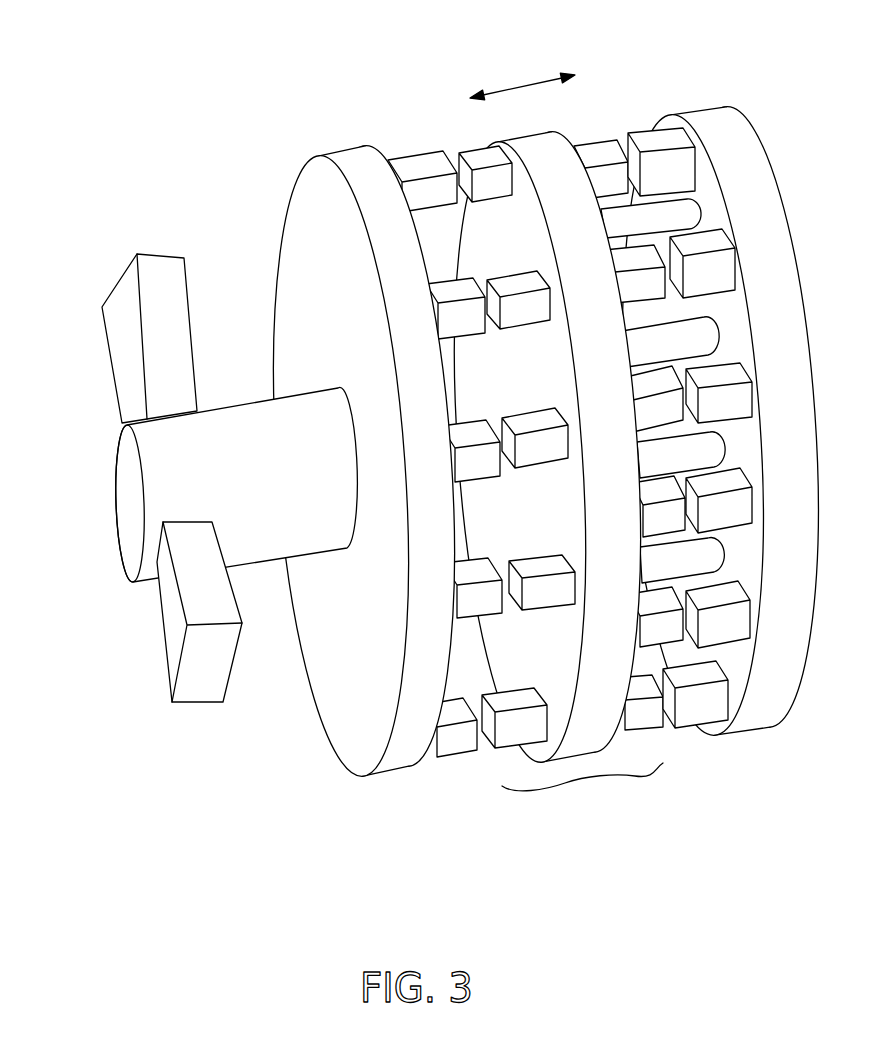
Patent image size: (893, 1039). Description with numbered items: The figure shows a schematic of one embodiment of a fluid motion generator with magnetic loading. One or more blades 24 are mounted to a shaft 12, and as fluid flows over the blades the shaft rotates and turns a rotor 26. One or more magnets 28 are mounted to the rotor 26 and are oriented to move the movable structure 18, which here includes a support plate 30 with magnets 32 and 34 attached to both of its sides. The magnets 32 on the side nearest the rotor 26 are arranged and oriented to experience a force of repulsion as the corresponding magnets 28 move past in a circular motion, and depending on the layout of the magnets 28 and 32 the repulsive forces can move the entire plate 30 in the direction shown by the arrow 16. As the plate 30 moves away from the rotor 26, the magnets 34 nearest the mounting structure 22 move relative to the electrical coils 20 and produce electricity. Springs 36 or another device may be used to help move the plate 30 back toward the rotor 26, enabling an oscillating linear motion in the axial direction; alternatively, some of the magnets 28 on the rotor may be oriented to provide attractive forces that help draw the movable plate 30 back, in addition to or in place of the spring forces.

The shaft 12 is at (132, 524).
The arrow 16 is at (534, 84).
The movable structure 18 is at (582, 793).
The electrical coils 20 is at (655, 135).
The mounting structure 22 is at (717, 112).
The blades 24 is at (177, 640).
The rotor 26 is at (308, 208).
The magnets 28 is at (417, 162).
The support plate 30 is at (565, 130).
The magnets 32 is at (477, 147).
The magnets 34 is at (592, 140).
The springs 36 is at (687, 212).